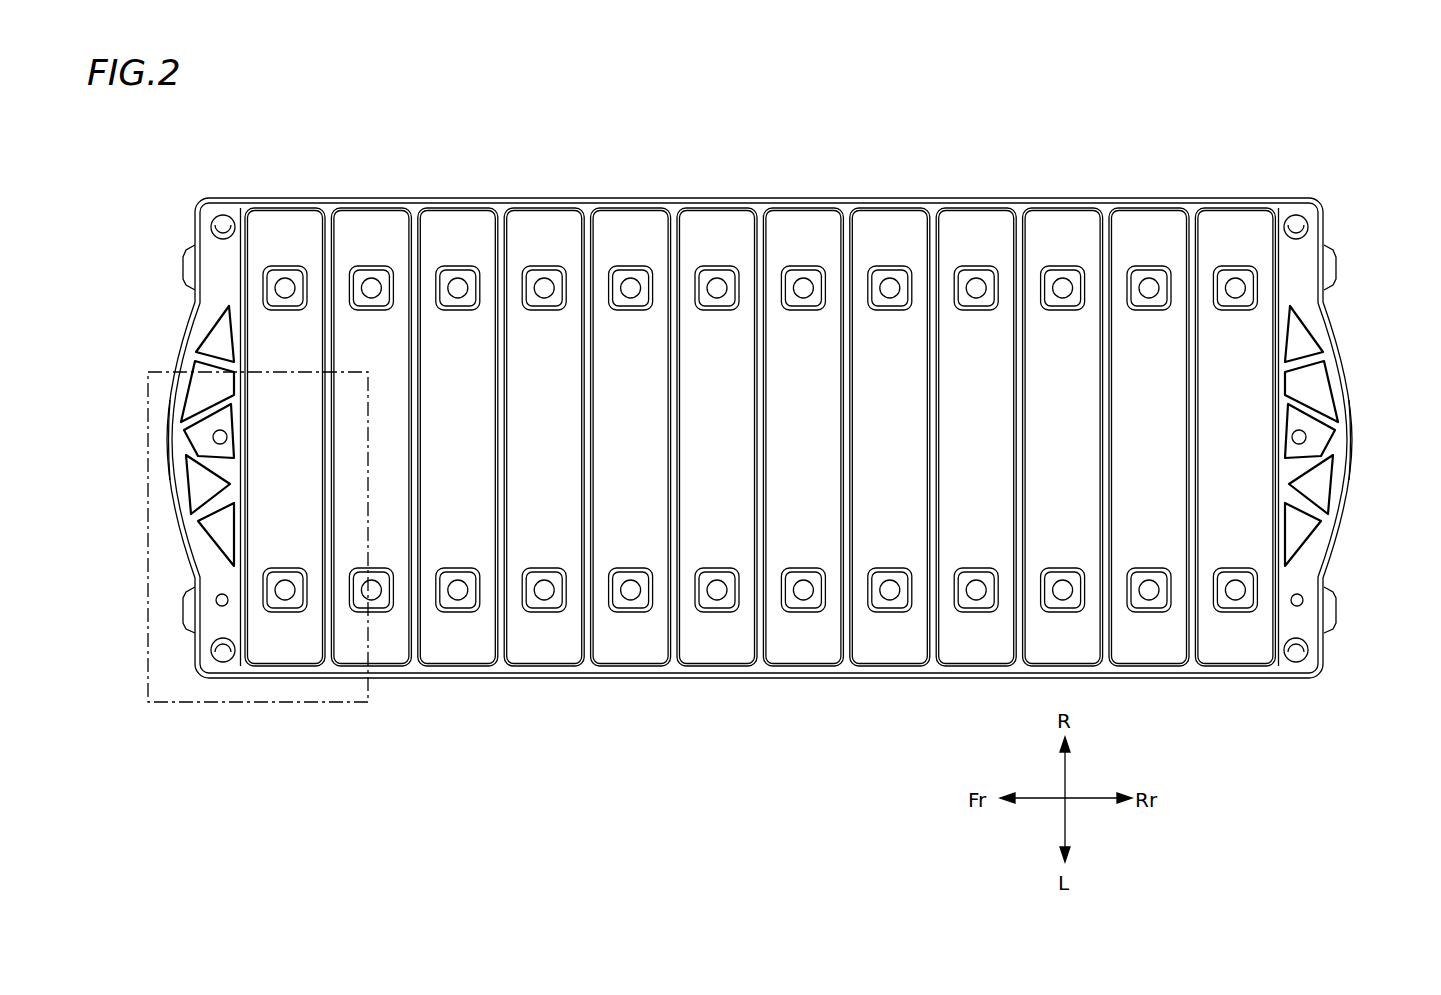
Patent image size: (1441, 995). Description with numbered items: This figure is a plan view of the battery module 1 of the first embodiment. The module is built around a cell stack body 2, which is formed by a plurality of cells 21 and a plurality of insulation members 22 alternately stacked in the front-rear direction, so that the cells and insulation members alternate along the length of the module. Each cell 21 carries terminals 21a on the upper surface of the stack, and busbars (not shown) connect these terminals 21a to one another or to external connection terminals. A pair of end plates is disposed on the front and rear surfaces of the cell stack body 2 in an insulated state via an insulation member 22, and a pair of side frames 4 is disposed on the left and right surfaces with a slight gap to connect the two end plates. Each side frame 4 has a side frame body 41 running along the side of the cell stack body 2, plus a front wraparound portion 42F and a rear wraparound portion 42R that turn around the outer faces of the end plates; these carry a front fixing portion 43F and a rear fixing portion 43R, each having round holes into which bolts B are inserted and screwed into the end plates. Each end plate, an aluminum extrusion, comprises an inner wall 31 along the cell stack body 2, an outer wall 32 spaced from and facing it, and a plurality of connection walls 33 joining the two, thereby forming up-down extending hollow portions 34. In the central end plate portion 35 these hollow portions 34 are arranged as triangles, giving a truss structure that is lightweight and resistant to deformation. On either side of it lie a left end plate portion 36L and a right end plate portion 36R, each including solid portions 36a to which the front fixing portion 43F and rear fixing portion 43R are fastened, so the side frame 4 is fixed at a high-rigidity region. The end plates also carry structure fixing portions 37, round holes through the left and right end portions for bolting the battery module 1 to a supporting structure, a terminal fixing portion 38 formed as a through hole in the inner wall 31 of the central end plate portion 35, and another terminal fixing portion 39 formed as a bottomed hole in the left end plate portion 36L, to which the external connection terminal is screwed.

The battery module 1 is at (1153, 78).
The cell stack body 2 is at (878, 368).
The side frame 4 is at (600, 198).
The side frame body 41 is at (759, 438).
The cell 21 is at (610, 353).
The terminal 21a is at (976, 284).
The insulation member 22 is at (673, 433).
The inner wall 31 is at (190, 358).
The outer wall 32 is at (183, 477).
The connection wall 33 is at (195, 368).
The hollow portion 34 is at (198, 330).
The central end plate portion 35 is at (168, 443).
The right end plate portion 36R is at (186, 268).
The left end plate portion 36L is at (193, 638).
The solid portion 36a is at (759, 452).
The structure fixing portion 37 is at (222, 215).
The terminal fixing portion 38 is at (212, 436).
The terminal fixing portion 39 is at (217, 594).
The front wraparound portion 42F is at (192, 222).
The front fixing portion 43F is at (163, 455).
The rear wraparound portion 42R is at (1328, 228).
The rear fixing portion 43R is at (1358, 454).
The bolt B is at (185, 257).